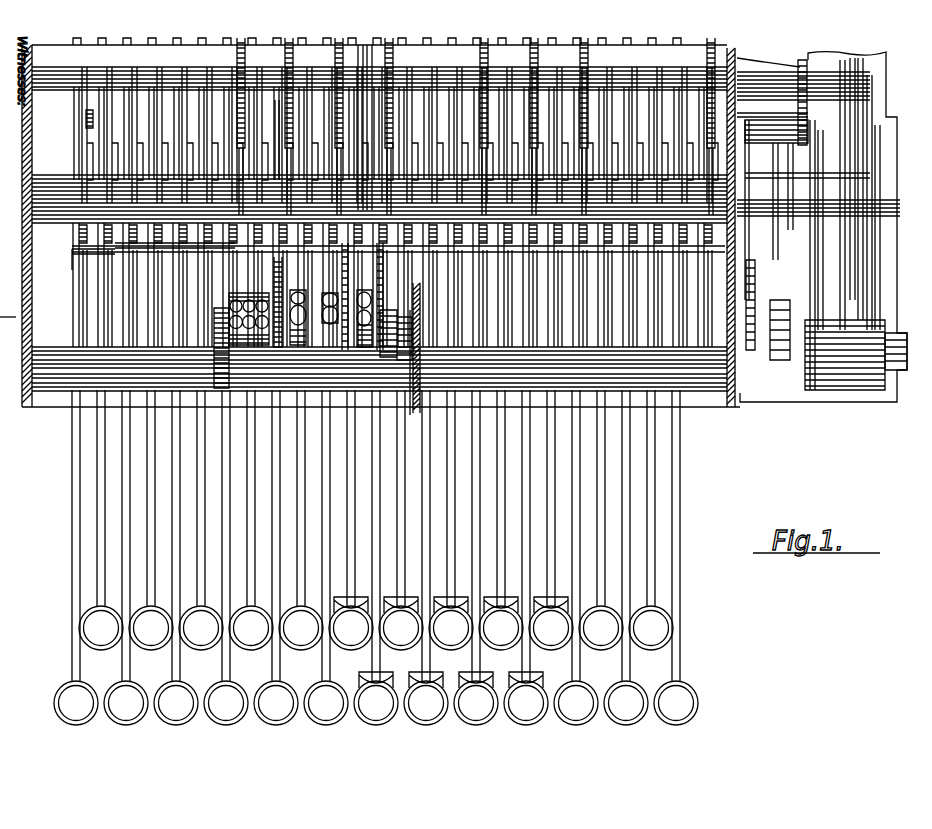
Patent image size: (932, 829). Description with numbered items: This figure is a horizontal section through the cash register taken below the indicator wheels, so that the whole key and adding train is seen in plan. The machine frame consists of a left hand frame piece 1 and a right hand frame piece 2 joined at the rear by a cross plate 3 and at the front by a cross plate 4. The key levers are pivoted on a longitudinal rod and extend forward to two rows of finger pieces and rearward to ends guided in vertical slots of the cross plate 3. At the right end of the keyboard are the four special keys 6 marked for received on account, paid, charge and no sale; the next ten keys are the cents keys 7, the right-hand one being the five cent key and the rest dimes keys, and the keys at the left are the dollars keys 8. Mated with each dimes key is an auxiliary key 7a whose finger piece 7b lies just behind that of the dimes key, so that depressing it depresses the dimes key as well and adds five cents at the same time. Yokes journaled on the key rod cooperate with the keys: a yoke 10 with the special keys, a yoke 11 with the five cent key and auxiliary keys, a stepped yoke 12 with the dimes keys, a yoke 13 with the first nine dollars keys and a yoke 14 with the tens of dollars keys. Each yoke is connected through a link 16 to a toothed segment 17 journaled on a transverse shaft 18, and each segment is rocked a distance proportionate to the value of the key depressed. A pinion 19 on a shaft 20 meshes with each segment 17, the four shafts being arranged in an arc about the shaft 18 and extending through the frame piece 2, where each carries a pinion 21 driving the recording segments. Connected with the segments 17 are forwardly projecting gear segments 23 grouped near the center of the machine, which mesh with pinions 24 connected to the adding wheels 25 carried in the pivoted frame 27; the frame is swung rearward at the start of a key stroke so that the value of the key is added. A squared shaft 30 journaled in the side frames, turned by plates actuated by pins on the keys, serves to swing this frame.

The left hand frame piece 1 is at (28, 213).
The right hand frame piece 2 is at (738, 54).
The cross plate 3 is at (633, 53).
The cross plate 4 is at (693, 400).
The special keys 6 is at (653, 597).
The cents keys 7 is at (353, 647).
The auxiliary key 7a is at (432, 540).
The finger piece of the auxiliary key 7b is at (553, 603).
The dollars keys 8 is at (158, 647).
The yoke 10 is at (670, 257).
The yoke 11 is at (448, 243).
The yoke 12 is at (277, 124).
The yoke 13 is at (197, 248).
The yoke 14 is at (72, 245).
The link 16 is at (86, 120).
The toothed segment 17 is at (93, 135).
The transverse shaft 18 is at (30, 197).
The pinion 19 is at (100, 78).
The shaft 20 is at (67, 88).
The pinion 21 is at (840, 62).
The gear segment 23 is at (270, 268).
The pinion 24 is at (280, 300).
The adding wheel 25 is at (357, 360).
The pivoted frame 27 is at (218, 347).
The squared shaft 30 is at (85, 160).